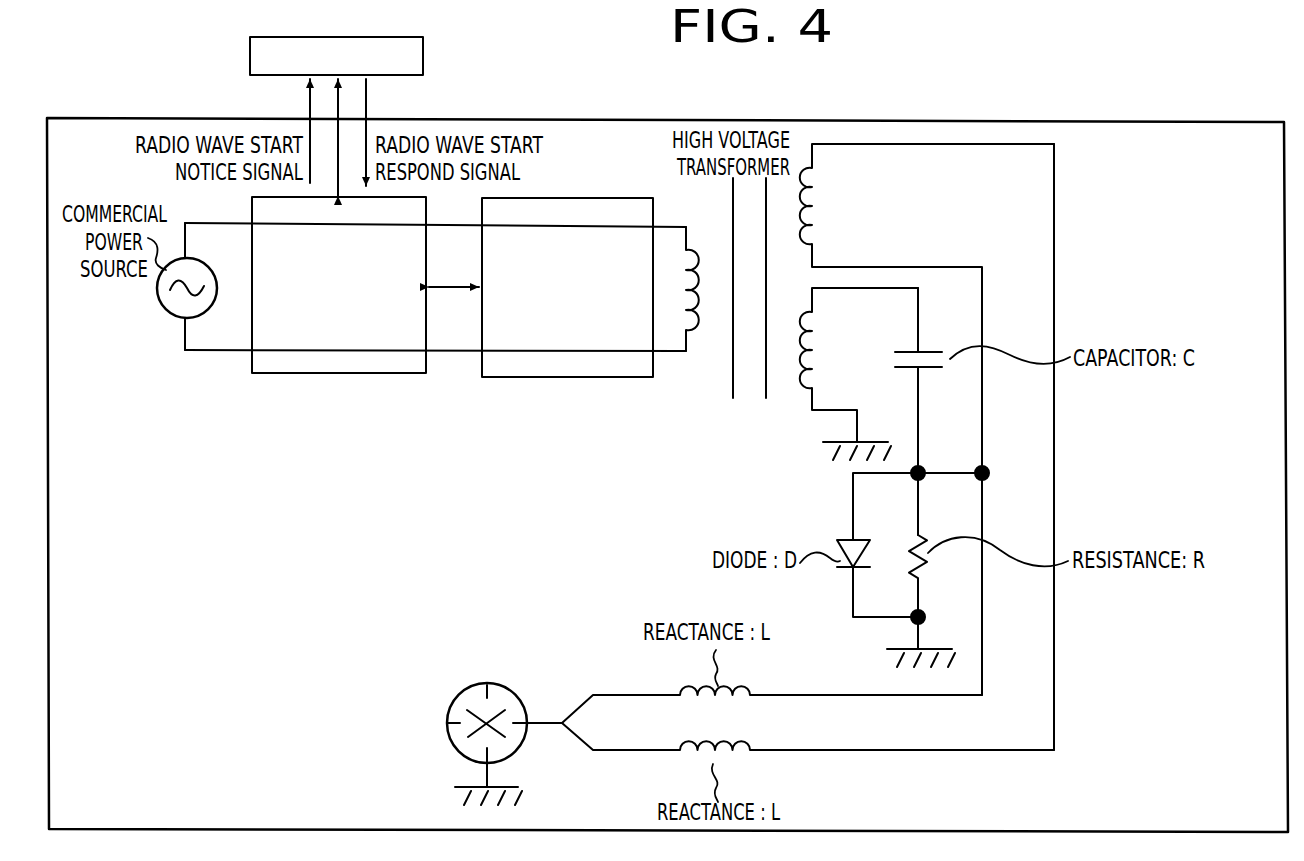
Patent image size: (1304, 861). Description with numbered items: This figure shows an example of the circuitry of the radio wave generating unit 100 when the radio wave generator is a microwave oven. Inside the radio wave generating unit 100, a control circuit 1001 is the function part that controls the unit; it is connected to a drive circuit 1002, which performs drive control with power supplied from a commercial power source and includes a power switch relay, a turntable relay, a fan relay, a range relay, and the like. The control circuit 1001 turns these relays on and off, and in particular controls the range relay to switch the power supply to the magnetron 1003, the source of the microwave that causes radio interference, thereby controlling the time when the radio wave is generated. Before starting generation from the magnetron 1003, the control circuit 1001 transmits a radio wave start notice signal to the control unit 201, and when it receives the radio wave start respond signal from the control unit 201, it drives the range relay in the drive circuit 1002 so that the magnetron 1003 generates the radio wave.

The radio wave generating unit 100 is at (963, 121).
The control unit 201 is at (425, 57).
The control circuit 1001 is at (338, 375).
The drive circuit 1002 is at (567, 378).
The magnetron 1003 is at (465, 693).